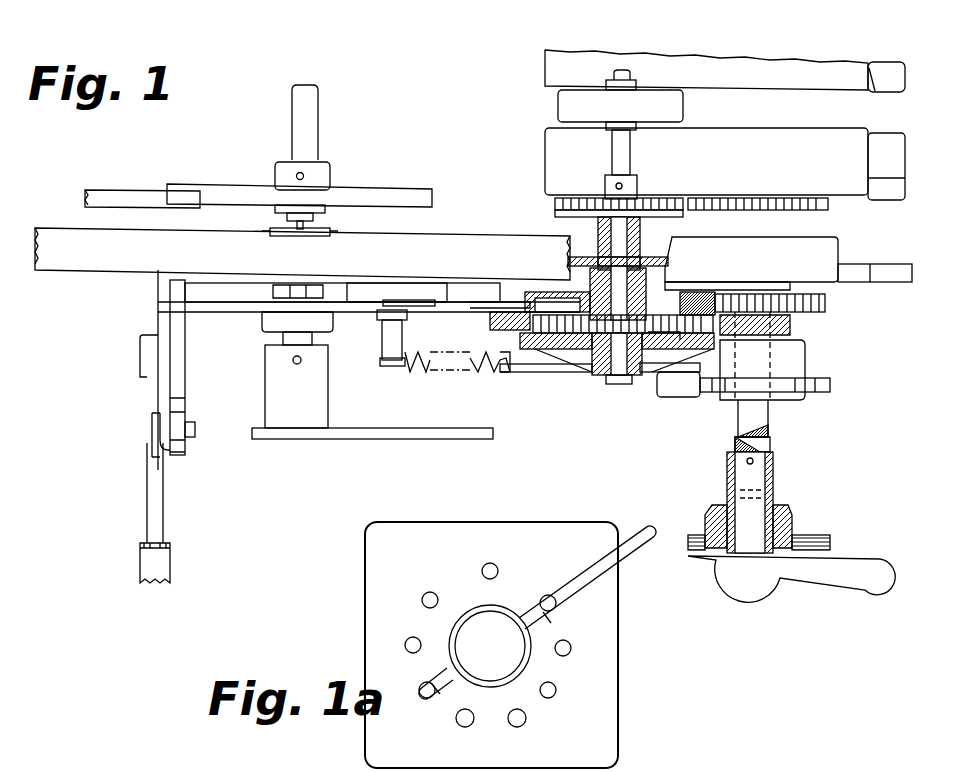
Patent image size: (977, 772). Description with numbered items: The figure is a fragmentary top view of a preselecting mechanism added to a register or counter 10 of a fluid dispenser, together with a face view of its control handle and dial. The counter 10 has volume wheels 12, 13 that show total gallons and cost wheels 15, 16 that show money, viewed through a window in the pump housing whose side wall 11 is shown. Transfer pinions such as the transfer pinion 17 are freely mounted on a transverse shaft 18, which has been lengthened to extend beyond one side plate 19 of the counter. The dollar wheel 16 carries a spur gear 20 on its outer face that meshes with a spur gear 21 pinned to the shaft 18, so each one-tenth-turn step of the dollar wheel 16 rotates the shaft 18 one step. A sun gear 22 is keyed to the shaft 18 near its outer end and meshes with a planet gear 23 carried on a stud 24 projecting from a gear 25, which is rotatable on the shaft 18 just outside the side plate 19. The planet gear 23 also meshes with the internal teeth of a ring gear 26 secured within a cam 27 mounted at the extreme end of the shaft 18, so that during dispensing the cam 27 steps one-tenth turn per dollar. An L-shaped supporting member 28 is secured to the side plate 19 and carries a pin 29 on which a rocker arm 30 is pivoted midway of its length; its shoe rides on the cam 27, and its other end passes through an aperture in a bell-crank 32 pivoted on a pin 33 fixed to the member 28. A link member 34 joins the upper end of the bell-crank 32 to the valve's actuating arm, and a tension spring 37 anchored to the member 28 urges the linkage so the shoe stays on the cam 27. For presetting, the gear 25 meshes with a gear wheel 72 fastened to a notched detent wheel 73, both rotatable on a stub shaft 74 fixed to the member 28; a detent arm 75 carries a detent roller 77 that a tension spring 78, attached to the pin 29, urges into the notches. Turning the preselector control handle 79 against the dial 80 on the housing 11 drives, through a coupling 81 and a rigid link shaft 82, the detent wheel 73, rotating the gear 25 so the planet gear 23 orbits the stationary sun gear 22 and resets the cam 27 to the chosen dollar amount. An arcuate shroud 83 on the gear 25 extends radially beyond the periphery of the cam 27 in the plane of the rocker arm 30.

In FIG. 1, the register or counter 10 is at (905, 71).
In FIG. 1, the pump housing side wall 11 is at (795, 535).
In FIG. 1, the volume (gallon) wheel 12 is at (905, 85).
In FIG. 1, the volume (gallon) wheel 13 is at (905, 156).
In FIG. 1, the cost or money wheel 15 is at (880, 91).
In FIG. 1, the dollar wheel 16 is at (905, 184).
In FIG. 1, the transfer pinion 17 is at (558, 104).
In FIG. 1, the transfer pinion shaft 18 is at (622, 151).
In FIG. 1, the side plate 19 is at (634, 262).
In FIG. 1, the spur gear 20 is at (830, 207).
In FIG. 1, the spur gear 21 is at (555, 206).
In FIG. 1, the sun gear 22 is at (593, 336).
In FIG. 1, the planet gear 23 is at (673, 334).
In FIG. 1, the stud 24 is at (688, 296).
In FIG. 1, the gear 25 is at (548, 292).
In FIG. 1, the ring gear 26 is at (546, 340).
In FIG. 1, the cam or rotatable actuating member 27 is at (745, 330).
In FIG. 1, the supporting member 28 is at (404, 283).
In FIG. 1, the pin 29 is at (403, 328).
In FIG. 1, the rocker arm or actuated member 30 is at (255, 300).
In FIG. 1, the bell-crank 32 is at (190, 367).
In FIG. 1, the pin 33 is at (192, 405).
In FIG. 1, the link member 34 is at (150, 506).
In FIG. 1, the tension spring 37 is at (140, 358).
In FIG. 1, the gear wheel 72 is at (828, 302).
In FIG. 1, the notched detent wheel 73 is at (806, 388).
In FIG. 1, the stub shaft 74 is at (773, 318).
In FIG. 1, the detent arm 75 is at (546, 372).
In FIG. 1, the detent roller 77 is at (688, 397).
In FIG. 1, the tension spring 78 is at (470, 366).
In FIG. 1, the preselector control handle 79 is at (862, 567).
In FIG. 1a, the preselector control handle 79 is at (642, 540).
In FIG. 1, the dial 80 is at (830, 545).
In FIG. 1a, the dial 80 is at (618, 680).
In FIG. 1, the coupling 81 is at (774, 471).
In FIG. 1, the rigid link shaft 82 is at (770, 418).
In FIG. 1, the arcuate skirt or shroud 83 is at (517, 305).